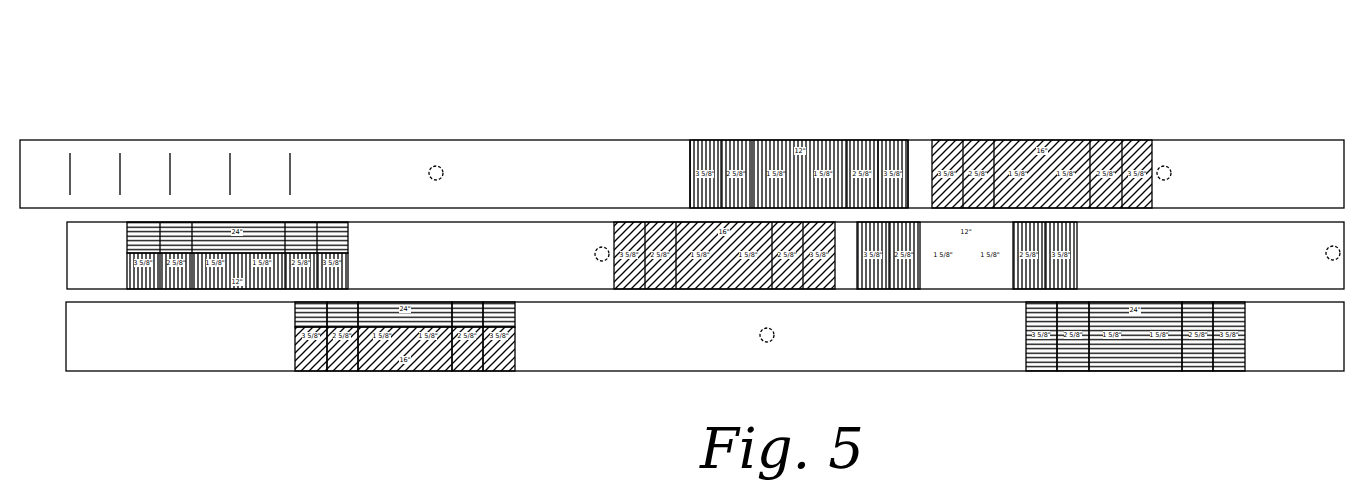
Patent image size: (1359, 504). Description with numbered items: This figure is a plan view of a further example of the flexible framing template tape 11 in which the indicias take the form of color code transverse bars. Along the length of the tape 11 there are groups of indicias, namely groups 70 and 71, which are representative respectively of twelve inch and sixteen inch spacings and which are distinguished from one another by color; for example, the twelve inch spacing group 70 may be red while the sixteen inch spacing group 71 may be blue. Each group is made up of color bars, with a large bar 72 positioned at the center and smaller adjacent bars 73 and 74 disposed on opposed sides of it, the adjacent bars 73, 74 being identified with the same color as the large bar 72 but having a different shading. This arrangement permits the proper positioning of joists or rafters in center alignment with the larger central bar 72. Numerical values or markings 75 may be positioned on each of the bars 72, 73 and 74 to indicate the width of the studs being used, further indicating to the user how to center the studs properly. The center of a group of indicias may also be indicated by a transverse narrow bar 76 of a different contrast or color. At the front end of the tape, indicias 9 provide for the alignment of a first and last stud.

The flexible framing template tape 11 is at (558, 122).
The indicias 9 is at (232, 168).
The group of indicias 70 is at (825, 128).
The group of indicias 71 is at (1072, 135).
The large bar 72 is at (782, 145).
The smaller adjacent bar 73 is at (732, 128).
The smaller adjacent bar 74 is at (705, 138).
The numerical values or markings 75 is at (1072, 362).
The transverse narrow bar 76 is at (1139, 360).